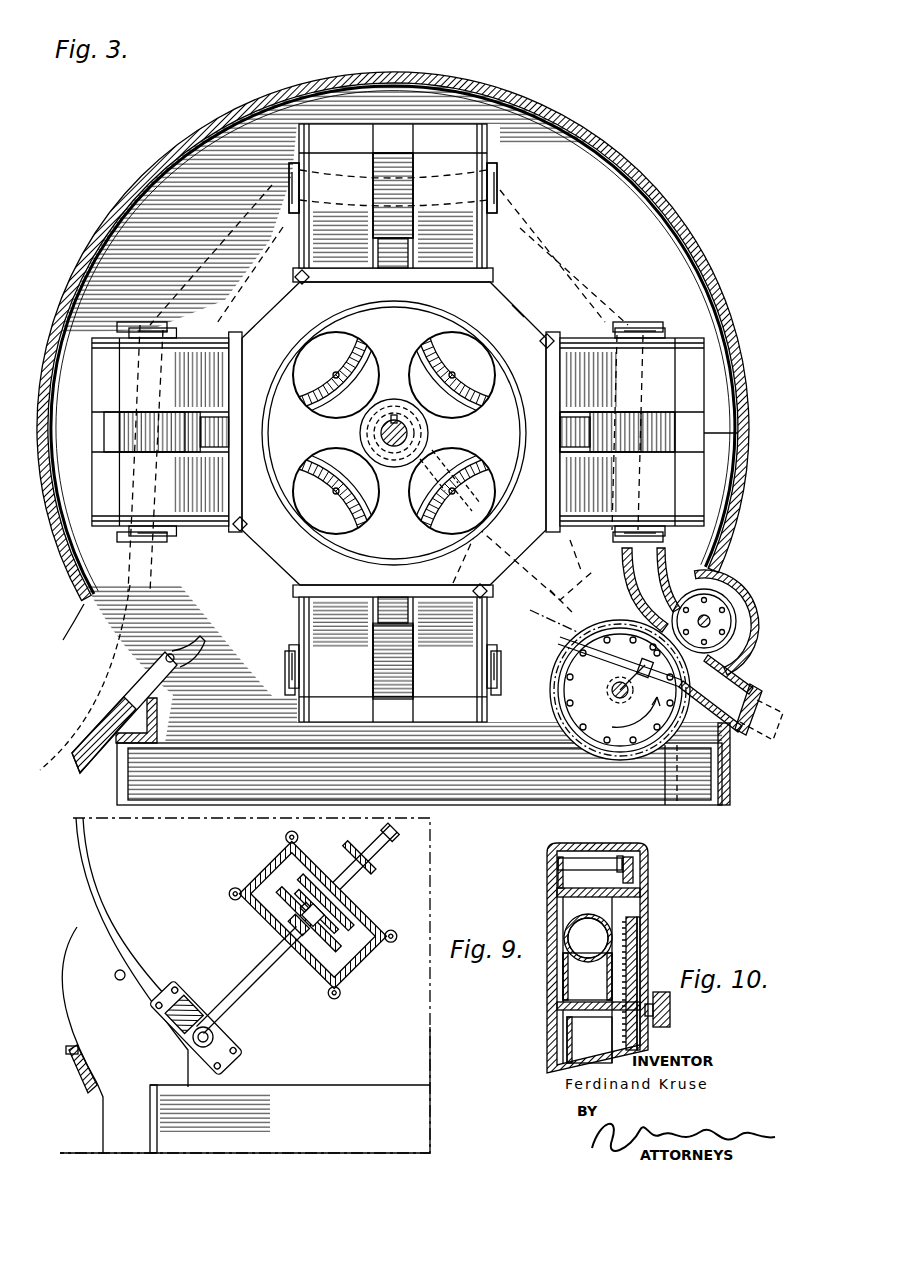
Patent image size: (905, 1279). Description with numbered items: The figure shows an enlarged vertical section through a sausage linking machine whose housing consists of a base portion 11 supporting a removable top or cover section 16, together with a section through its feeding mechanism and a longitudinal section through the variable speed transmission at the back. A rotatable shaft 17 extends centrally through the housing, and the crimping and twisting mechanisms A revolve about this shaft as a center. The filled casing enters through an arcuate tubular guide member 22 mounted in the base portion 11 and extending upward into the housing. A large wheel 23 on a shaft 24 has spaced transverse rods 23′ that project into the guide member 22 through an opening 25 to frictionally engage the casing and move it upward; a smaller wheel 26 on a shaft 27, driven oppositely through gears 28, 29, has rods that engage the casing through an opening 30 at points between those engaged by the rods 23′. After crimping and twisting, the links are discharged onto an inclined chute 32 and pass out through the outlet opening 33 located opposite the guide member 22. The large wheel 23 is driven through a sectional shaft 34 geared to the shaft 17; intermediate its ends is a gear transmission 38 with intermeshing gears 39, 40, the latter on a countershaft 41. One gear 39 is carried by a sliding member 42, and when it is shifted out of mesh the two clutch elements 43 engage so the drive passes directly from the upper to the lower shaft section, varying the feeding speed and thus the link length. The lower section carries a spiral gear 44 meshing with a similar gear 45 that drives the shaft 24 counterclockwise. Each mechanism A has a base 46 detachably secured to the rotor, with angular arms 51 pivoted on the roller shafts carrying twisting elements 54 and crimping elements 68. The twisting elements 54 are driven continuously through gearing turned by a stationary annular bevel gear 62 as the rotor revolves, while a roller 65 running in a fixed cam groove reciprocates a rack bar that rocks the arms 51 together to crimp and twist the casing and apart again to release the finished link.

In FIG. 3, the base portion 11 is at (511, 804).
In FIG. 3, the top or cover section 16 is at (655, 205).
In FIG. 3, the rotatable shaft 17 is at (376, 434).
In FIG. 3, the arcuate tubular guide member 22 is at (751, 731).
In FIG. 10, the arcuate tubular guide member 22 is at (560, 940).
In FIG. 3, the large wheel 23 is at (575, 648).
In FIG. 10, the large wheel 23 is at (561, 984).
In FIG. 3, the spaced transverse rods 23′ is at (627, 637).
In FIG. 10, the spaced transverse rods 23′ is at (641, 955).
In FIG. 3, the shaft 24 is at (609, 697).
In FIG. 9, the shaft 24 is at (188, 1050).
In FIG. 10, the shaft 24 is at (586, 1013).
In FIG. 3, the opening 25 is at (680, 708).
In FIG. 10, the opening 25 is at (587, 976).
In FIG. 3, the smaller wheel 26 is at (716, 600).
In FIG. 10, the smaller wheel 26 is at (621, 855).
In FIG. 3, the shaft 27 is at (712, 622).
In FIG. 9, the shaft 27 is at (120, 981).
In FIG. 10, the shaft 27 is at (584, 890).
In FIG. 3, the gear 28 is at (672, 740).
In FIG. 10, the gear 28 is at (642, 978).
In FIG. 3, the gear 29 is at (745, 655).
In FIG. 10, the gear 29 is at (636, 880).
In FIG. 3, the opening 30 is at (700, 672).
In FIG. 10, the opening 30 is at (589, 928).
In FIG. 3, the chute 32 is at (188, 648).
In FIG. 3, the outlet opening 33 is at (80, 618).
In FIG. 9, the sectional shaft 34 is at (386, 838).
In FIG. 3, the gear transmission 38 is at (571, 614).
In FIG. 9, the gear transmission 38 is at (364, 952).
In FIG. 9, the gear 39 is at (318, 860).
In FIG. 9, the gear 40 is at (372, 920).
In FIG. 9, the countershaft 41 is at (330, 960).
In FIG. 9, the sliding member 42 is at (361, 871).
In FIG. 9, the clutch elements 43 is at (286, 880).
In FIG. 9, the spiral gear 44 is at (194, 1000).
In FIG. 3, the spiral gear 45 is at (519, 311).
In FIG. 9, the spiral gear 45 is at (226, 1037).
In FIG. 10, the spiral gear 45 is at (671, 1020).
In FIG. 3, the base 46 is at (240, 334).
In FIG. 3, the angular arm 51 is at (500, 240).
In FIG. 3, the twisting elements 54 is at (412, 231).
In FIG. 3, the stationary annular bevel gear 62 is at (452, 344).
In FIG. 3, the roller 65 is at (295, 280).
In FIG. 3, the crimping elements 68 is at (503, 196).
In FIG. 3, the crimping and twisting mechanisms A is at (492, 172).